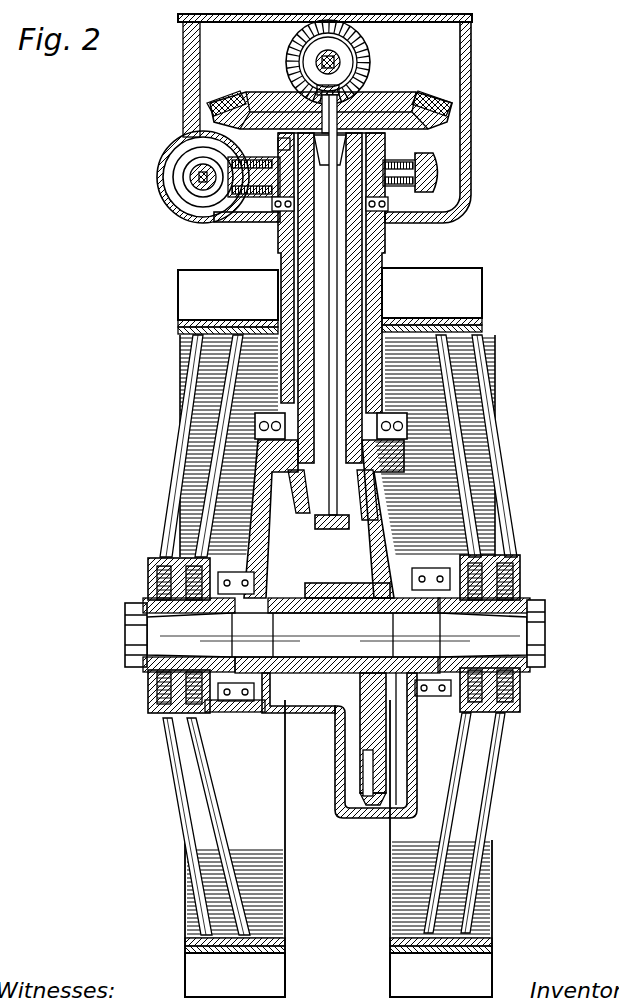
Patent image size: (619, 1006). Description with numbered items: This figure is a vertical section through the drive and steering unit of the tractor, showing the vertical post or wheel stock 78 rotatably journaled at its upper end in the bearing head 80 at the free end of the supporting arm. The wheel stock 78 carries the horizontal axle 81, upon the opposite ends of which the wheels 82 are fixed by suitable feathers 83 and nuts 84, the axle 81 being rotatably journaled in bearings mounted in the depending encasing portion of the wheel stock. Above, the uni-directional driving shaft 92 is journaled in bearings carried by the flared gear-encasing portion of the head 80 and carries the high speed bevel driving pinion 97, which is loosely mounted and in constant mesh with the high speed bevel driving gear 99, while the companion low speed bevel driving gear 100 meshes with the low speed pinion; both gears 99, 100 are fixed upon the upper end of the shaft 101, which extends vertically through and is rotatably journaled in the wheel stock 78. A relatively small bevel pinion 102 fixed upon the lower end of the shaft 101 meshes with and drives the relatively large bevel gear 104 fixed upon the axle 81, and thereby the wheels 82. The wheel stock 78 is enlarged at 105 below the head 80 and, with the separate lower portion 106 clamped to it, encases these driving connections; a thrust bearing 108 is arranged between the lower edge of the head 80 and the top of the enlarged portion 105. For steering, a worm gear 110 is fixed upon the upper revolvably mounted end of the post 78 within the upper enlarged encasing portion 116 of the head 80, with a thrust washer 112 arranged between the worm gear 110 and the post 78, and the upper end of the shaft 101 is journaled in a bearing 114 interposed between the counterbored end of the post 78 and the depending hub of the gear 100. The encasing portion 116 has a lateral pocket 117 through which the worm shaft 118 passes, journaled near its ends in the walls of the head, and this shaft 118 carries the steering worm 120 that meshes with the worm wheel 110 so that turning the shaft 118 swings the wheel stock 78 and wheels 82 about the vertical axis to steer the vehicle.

The wheel stock 78 is at (386, 253).
The bearing head 80 is at (279, 249).
The axle 81 is at (323, 675).
The wheels 82 is at (390, 921).
The feathers 83 is at (150, 662).
The nuts 84 is at (546, 641).
The uni-directional driving shaft 92 is at (345, 56).
The high speed bevel driving pinion 97 is at (300, 46).
The high speed bevel driving gear 99 is at (258, 100).
The low speed bevel driving gear 100 is at (212, 110).
The shaft 101 is at (338, 302).
The bevel pinion 102 is at (318, 524).
The bevel gear 104 is at (360, 745).
The enlarged portion 105 is at (258, 512).
The lower portion 106 is at (345, 800).
The thrust bearing 108 is at (258, 457).
The steering worm gear 110 is at (432, 168).
The thrust washer 112 is at (262, 220).
The bearing 114 is at (278, 143).
The encasing portion 116 is at (470, 92).
The lateral pocket 117 is at (172, 148).
The worm shaft 118 is at (192, 177).
The steering worm 120 is at (183, 190).